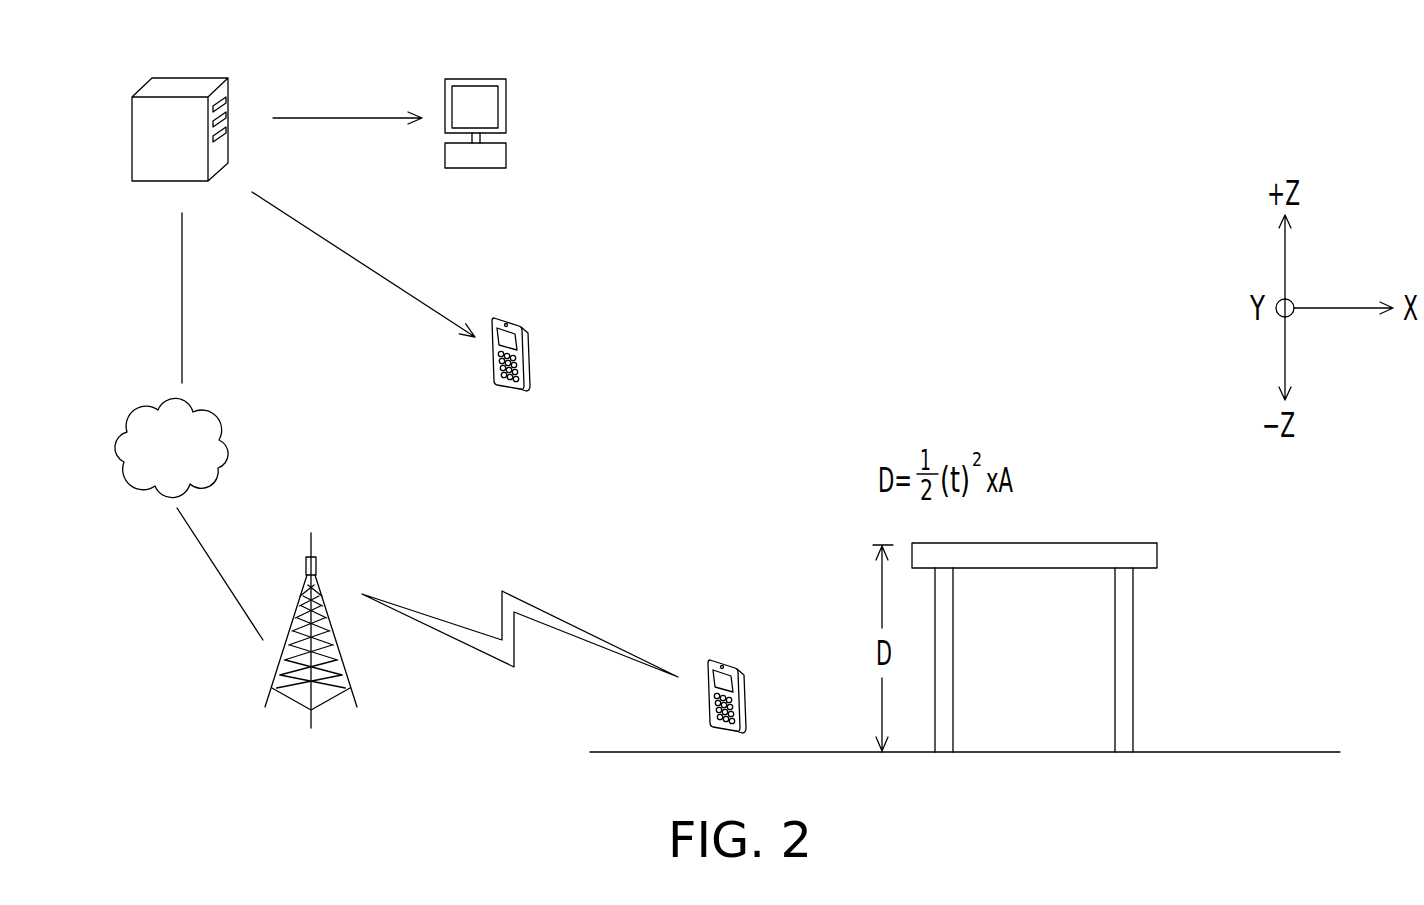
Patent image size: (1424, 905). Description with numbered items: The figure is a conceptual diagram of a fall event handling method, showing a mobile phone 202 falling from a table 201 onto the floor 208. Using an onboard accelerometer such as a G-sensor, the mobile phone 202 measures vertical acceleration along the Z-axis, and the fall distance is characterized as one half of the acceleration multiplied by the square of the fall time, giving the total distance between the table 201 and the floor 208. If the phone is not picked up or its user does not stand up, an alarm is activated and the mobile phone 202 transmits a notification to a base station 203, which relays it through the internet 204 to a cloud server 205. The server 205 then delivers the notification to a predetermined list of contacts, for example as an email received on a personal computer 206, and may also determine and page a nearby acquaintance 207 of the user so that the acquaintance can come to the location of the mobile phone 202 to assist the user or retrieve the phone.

The table 201 is at (1159, 555).
The mobile phone 202 is at (735, 657).
The base station 203 is at (313, 545).
The internet 204 is at (207, 403).
The cloud server 205 is at (190, 78).
The personal computer 206 is at (506, 107).
The acquaintance 207 is at (521, 326).
The floor 208 is at (965, 726).